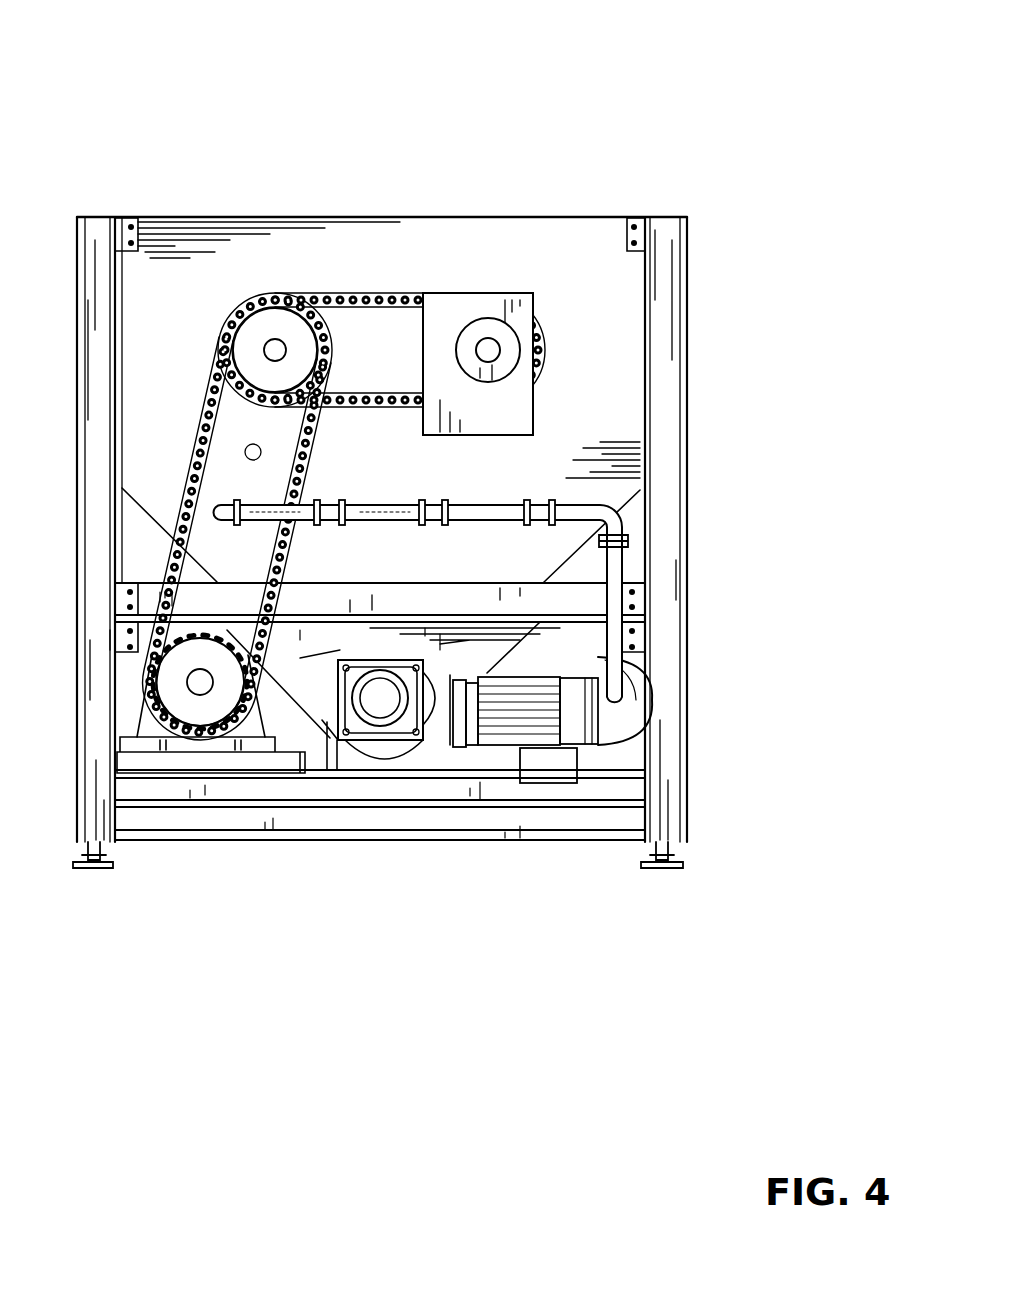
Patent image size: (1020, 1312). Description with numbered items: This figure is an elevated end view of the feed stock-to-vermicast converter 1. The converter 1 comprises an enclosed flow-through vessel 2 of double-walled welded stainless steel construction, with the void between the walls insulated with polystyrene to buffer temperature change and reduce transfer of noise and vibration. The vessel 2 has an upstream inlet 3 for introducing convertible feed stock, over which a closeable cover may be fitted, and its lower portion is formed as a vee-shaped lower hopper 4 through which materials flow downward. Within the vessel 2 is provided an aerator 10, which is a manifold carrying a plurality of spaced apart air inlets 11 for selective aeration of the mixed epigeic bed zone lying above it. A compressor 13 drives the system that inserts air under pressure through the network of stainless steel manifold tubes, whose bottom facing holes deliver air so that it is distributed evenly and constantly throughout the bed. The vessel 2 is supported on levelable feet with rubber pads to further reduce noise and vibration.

The feed stock-to-vermicast converter 1 is at (457, 110).
The enclosed flow-through vessel 2 is at (599, 267).
The upstream inlet 3 is at (200, 200).
The vee-shaped lower hopper 4 is at (537, 574).
The aerator 10 is at (360, 522).
The air inlets 11 is at (536, 502).
The compressor 13 is at (627, 703).